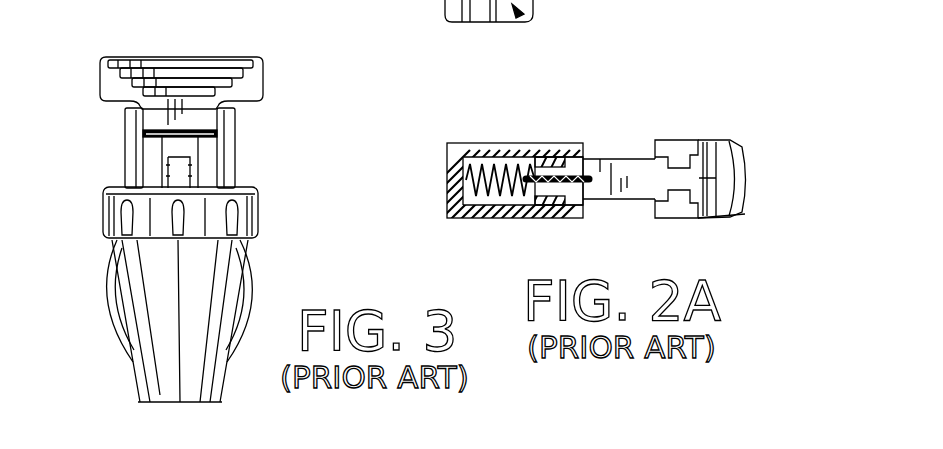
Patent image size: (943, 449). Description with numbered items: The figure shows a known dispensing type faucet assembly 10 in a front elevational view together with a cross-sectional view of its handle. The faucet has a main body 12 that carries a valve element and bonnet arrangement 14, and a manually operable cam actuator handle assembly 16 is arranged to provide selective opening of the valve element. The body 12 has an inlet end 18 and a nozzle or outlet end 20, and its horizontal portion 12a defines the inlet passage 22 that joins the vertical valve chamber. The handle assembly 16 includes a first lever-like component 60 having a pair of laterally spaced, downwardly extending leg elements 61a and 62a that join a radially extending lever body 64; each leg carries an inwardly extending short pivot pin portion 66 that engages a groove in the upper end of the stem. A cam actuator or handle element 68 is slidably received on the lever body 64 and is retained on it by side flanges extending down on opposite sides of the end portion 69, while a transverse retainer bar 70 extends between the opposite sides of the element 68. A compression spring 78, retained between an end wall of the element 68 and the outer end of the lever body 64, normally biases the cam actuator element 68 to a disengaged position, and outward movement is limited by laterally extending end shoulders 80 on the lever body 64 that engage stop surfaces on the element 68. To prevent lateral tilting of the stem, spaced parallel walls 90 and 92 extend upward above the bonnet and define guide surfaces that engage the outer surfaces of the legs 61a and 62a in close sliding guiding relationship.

In FIG. 3, the faucet assembly 10 is at (266, 107).
In FIG. 3, the main body 12 is at (263, 281).
In FIG. 2A, the horizontal portion 12a is at (684, 16).
In FIG. 3, the valve element and bonnet arrangement 14 is at (101, 219).
In FIG. 3, the cam actuator handle assembly 16 is at (116, 53).
In FIG. 2A, the inlet end 18 is at (792, 16).
In FIG. 3, the outlet end 20 is at (212, 399).
In FIG. 2A, the outlet end 20 is at (445, 20).
In FIG. 2A, the inlet passage 22 is at (606, 16).
In FIG. 2A, the first lever-like component 60 is at (716, 222).
In FIG. 3, the leg element 61a is at (152, 160).
In FIG. 2A, the leg element 61a is at (684, 150).
In FIG. 3, the leg element 62a is at (205, 167).
In FIG. 2A, the leg element 62a is at (678, 203).
In FIG. 2A, the lever body 64 is at (616, 197).
In FIG. 2A, the pivot pin portions 66 is at (746, 178).
In FIG. 3, the cam actuator element 68 is at (264, 64).
In FIG. 2A, the cam actuator element 68 is at (446, 175).
In FIG. 2A, the end portion 69 is at (712, 150).
In FIG. 2A, the transverse retainer bar 70 is at (582, 158).
In FIG. 2A, the compression spring 78 is at (490, 150).
In FIG. 2A, the end shoulders 80 is at (548, 157).
In FIG. 3, the parallel wall 90 is at (236, 133).
In FIG. 3, the parallel wall 92 is at (124, 137).